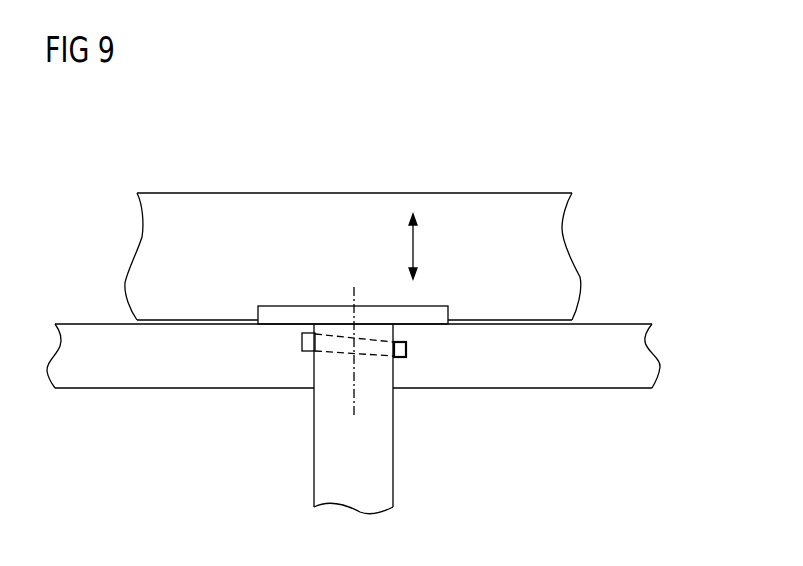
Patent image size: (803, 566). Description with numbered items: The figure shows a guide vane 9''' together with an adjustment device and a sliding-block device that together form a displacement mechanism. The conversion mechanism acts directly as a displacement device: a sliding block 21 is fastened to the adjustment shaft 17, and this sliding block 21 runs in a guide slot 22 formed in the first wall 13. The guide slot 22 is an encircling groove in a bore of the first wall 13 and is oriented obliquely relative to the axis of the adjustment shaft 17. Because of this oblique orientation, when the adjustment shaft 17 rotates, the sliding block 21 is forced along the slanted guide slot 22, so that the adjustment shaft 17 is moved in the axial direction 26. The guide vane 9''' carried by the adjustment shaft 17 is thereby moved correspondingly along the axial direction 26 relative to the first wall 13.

The guide vane 9''' is at (388, 256).
The first wall 13 is at (630, 357).
The adjustment shaft 17 is at (383, 455).
The sliding block 21 is at (407, 348).
The guide slot 22 is at (347, 353).
The axial direction 26 is at (414, 243).